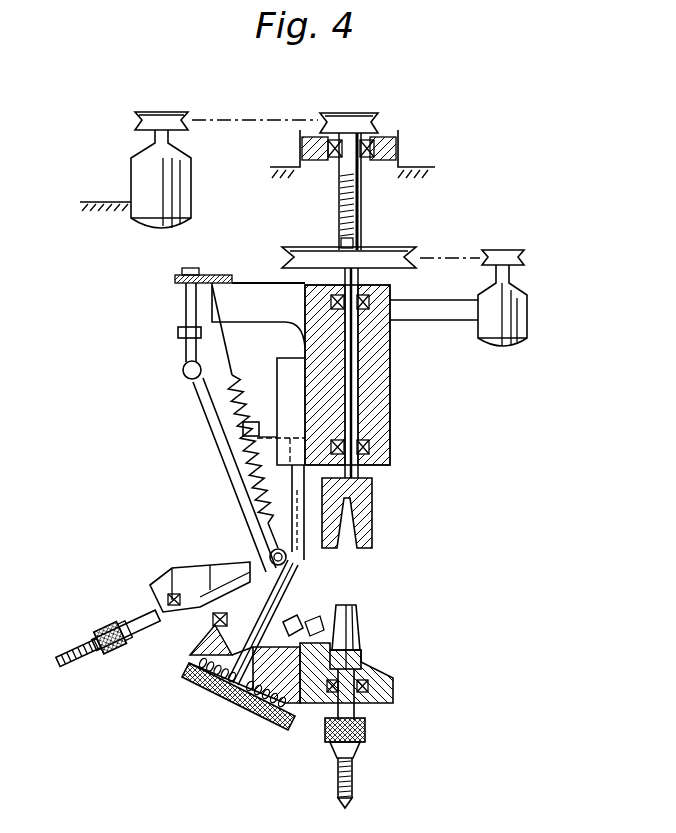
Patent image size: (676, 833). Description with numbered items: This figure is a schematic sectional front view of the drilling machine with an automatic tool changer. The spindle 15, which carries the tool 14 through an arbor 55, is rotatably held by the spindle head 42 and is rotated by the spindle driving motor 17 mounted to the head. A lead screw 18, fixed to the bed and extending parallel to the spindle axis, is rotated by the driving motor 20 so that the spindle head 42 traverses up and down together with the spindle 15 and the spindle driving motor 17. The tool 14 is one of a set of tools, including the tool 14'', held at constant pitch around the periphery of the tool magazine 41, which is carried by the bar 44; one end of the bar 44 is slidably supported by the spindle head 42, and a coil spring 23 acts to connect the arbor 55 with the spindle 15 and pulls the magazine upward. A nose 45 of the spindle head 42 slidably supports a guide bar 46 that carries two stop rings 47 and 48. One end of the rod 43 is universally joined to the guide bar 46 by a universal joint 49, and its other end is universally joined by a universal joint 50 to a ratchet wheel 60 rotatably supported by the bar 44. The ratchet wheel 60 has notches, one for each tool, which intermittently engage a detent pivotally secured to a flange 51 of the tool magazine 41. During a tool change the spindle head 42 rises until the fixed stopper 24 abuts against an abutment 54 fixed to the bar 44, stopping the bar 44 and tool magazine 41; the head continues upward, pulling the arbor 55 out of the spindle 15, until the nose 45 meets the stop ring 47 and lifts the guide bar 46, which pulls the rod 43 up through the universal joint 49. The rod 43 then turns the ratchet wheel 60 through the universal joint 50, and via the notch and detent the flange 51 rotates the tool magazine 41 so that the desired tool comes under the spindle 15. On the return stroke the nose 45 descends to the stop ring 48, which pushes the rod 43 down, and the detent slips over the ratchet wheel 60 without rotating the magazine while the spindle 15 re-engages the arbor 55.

The tool 14 is at (366, 738).
The tool 14'' is at (108, 639).
The spindle 15 is at (374, 490).
The spindle driving motor 17 is at (528, 314).
The lead screw 18 is at (363, 198).
The driving motor 20 is at (150, 182).
The coil spring 23 is at (257, 432).
The stopper 24 is at (245, 418).
The tool magazine 41 is at (177, 664).
The spindle head 42 is at (380, 402).
The rod 43 is at (198, 416).
The bar 44 is at (292, 577).
The nose 45 is at (243, 296).
The guide bar 46 is at (185, 304).
The stop ring 47 is at (177, 273).
The stop ring 48 is at (178, 333).
The universal joint 49 is at (183, 371).
The universal joint 50 is at (288, 628).
The flange 51 is at (152, 582).
The abutment 54 is at (260, 458).
The arbor 55 is at (360, 656).
The ratchet wheel 60 is at (318, 626).